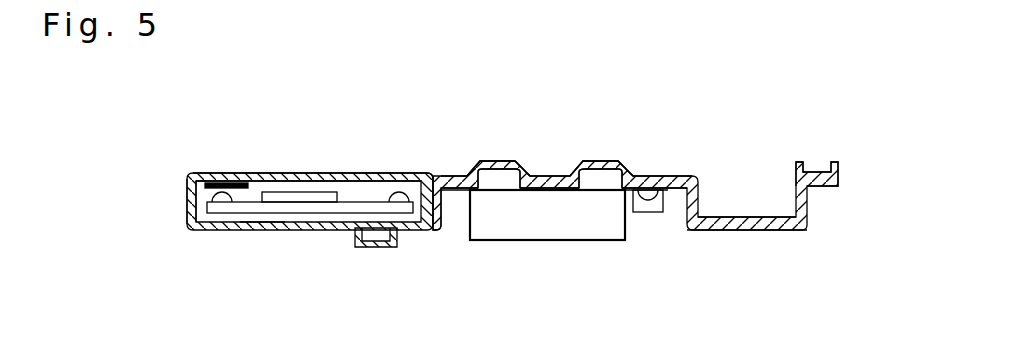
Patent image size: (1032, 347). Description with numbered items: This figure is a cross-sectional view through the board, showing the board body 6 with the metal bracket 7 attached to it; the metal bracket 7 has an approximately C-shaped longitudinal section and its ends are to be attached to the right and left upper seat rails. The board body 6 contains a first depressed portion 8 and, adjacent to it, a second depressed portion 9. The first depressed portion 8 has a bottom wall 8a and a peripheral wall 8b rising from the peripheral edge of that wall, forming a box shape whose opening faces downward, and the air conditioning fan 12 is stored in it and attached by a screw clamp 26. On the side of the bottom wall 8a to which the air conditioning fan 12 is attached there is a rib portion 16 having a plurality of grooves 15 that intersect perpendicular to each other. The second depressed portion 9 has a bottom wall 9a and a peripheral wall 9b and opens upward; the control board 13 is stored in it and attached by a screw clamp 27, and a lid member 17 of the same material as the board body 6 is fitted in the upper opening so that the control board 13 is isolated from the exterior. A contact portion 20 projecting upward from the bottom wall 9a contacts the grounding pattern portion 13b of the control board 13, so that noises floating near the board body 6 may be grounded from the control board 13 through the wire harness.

The board body 6 is at (767, 232).
The metal bracket 7 is at (840, 168).
The first depressed portion 8 is at (465, 194).
The bottom wall 8a is at (460, 175).
The peripheral wall 8b is at (448, 203).
The second depressed portion 9 is at (212, 258).
The bottom wall 9a is at (339, 232).
The peripheral wall 9b is at (188, 206).
The air conditioning fan 12 is at (542, 232).
The control board 13 is at (308, 207).
The grounding pattern portion 13b is at (259, 232).
The grooves 15 is at (494, 163).
The rib portion 16 is at (626, 107).
The lid member 17 is at (292, 175).
The contact portion 20 is at (253, 233).
The screw clamp 26 is at (657, 213).
The screw clamp 27 is at (227, 176).